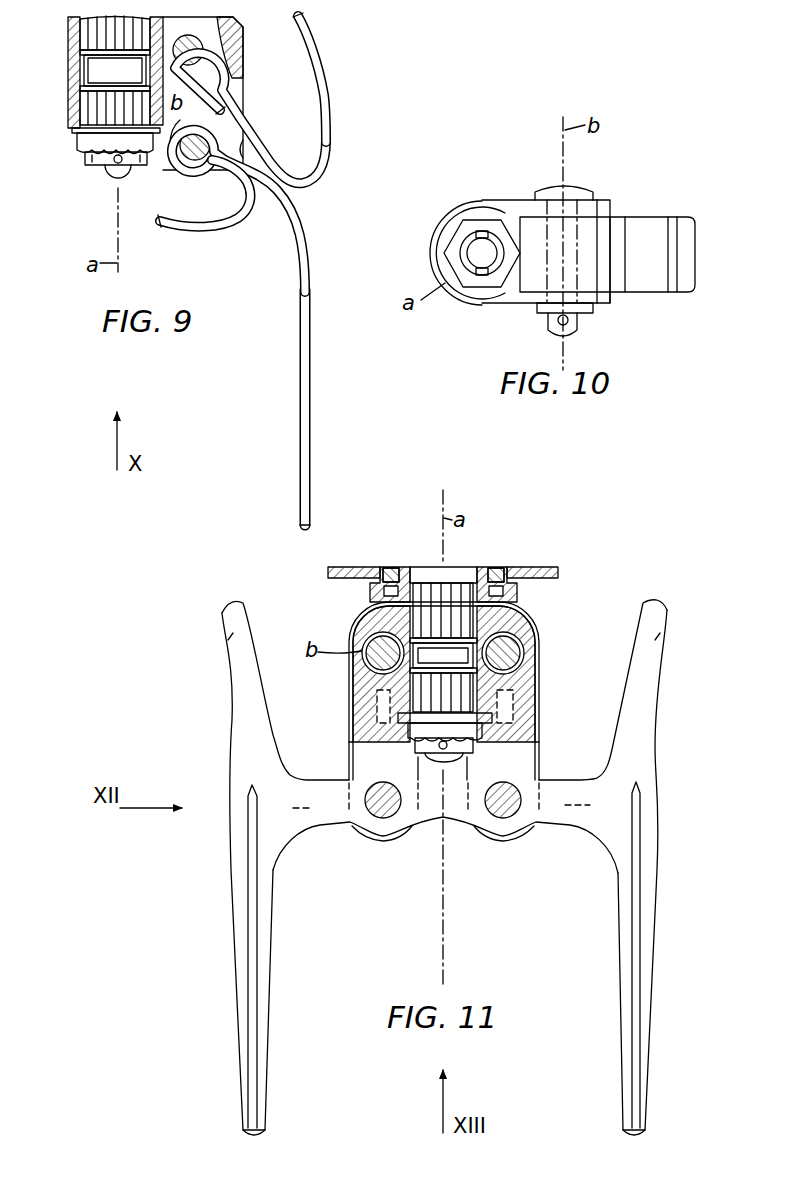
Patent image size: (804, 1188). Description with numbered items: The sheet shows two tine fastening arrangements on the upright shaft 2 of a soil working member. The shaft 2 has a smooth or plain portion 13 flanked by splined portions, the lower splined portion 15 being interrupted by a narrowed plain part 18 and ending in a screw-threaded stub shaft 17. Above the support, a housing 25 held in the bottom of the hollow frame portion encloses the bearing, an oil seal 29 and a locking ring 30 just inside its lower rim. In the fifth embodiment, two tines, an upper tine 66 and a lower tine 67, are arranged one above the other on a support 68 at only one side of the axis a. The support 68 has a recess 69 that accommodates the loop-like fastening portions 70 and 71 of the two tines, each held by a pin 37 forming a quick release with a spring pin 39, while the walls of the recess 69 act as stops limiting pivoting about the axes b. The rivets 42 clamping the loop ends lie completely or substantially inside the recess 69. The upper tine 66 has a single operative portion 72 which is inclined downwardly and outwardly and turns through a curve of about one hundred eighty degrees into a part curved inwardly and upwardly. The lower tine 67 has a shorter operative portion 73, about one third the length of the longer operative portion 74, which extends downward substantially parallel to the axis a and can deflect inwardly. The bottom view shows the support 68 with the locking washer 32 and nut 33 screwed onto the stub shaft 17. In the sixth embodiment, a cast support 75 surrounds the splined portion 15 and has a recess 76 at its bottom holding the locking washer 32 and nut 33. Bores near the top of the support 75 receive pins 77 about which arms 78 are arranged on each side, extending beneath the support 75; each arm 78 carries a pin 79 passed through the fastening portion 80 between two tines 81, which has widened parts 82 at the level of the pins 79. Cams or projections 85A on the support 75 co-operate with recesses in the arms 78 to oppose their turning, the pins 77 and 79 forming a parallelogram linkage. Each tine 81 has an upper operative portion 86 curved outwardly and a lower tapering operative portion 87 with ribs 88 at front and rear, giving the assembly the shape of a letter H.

In FIG. 9, the upright shaft 2 is at (76, 33).
In FIG. 11, the upright shaft 2 is at (427, 565).
In FIG. 11, the smooth or plain portion 13 is at (454, 572).
In FIG. 9, the splined portion 15 is at (88, 105).
In FIG. 9, the screw-threaded stub shaft 17 is at (107, 181).
In FIG. 11, the screw-threaded stub shaft 17 is at (440, 762).
In FIG. 9, the narrowed plain part 18 is at (90, 68).
In FIG. 11, the housing 25 is at (559, 573).
In FIG. 11, the oil seal 29 is at (504, 569).
In FIG. 11, the locking ring 30 is at (382, 598).
In FIG. 9, the locking washer 32 is at (82, 152).
In FIG. 10, the locking washer 32 is at (441, 245).
In FIG. 9, the nut 33 is at (88, 164).
In FIG. 10, the nut 33 is at (478, 255).
In FIG. 11, the nut 33 is at (414, 735).
In FIG. 9, the pin 37 is at (203, 163).
In FIG. 10, the pin 37 is at (575, 327).
In FIG. 10, the spring pin 39 is at (556, 325).
In FIG. 9, the rivets 42 is at (248, 152).
In FIG. 9, the upper tine 66 is at (330, 80).
In FIG. 10, the upper tine 66 is at (684, 215).
In FIG. 9, the lower tine 67 is at (316, 262).
In FIG. 10, the lower tine 67 is at (645, 294).
In FIG. 9, the support 68 is at (70, 118).
In FIG. 10, the support 68 is at (442, 218).
In FIG. 9, the recess 69 is at (163, 170).
In FIG. 10, the recess 69 is at (605, 200).
In FIG. 9, the loop-like fastening portion 70 is at (207, 49).
In FIG. 9, the loop-like fastening portion 71 is at (190, 168).
In FIG. 9, the operative portion 72 is at (314, 22).
In FIG. 9, the shorter operative portion 73 is at (207, 232).
In FIG. 10, the shorter operative portion 73 is at (616, 265).
In FIG. 9, the longer operative portion 74 is at (300, 385).
In FIG. 11, the support 75 is at (520, 641).
In FIG. 11, the recess 76 is at (476, 740).
In FIG. 11, the pin 77 is at (376, 640).
In FIG. 11, the arm 78 is at (350, 753).
In FIG. 11, the pin 79 is at (383, 819).
In FIG. 11, the fastening portion 80 is at (433, 825).
In FIG. 11, the tines 81 is at (228, 858).
In FIG. 11, the widened parts 82 is at (370, 836).
In FIG. 11, the cams or projections 85A is at (377, 718).
In FIG. 11, the operative portion 86 is at (232, 635).
In FIG. 11, the operative portion 87 is at (270, 952).
In FIG. 11, the ribs 88 is at (256, 1038).